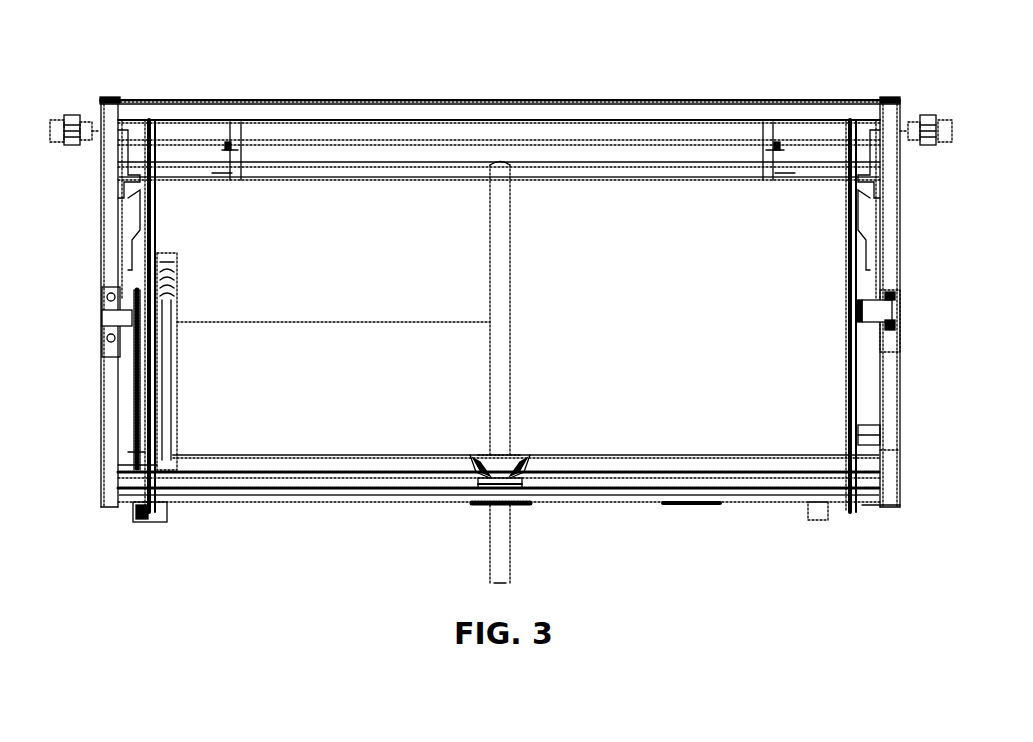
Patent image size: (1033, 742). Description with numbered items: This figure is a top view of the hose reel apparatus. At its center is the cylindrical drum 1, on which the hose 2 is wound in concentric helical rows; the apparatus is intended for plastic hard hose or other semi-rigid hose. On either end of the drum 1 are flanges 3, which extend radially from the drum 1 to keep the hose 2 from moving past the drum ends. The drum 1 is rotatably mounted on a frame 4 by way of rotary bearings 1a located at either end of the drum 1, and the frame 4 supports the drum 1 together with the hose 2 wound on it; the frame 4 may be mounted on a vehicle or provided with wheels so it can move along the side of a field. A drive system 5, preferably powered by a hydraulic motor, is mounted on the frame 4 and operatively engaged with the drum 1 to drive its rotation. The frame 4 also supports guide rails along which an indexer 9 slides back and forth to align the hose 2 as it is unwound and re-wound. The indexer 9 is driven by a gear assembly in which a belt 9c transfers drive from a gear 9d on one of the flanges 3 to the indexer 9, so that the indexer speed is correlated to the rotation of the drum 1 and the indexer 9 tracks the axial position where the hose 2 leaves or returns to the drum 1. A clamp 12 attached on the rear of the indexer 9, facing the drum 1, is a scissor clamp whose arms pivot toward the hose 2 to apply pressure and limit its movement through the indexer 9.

The cylindrical drum 1 is at (712, 178).
The rotary bearings 1a is at (103, 318).
The hose 2 is at (500, 163).
The flanges 3 is at (155, 150).
The frame 4 is at (888, 507).
The drive system 5 is at (64, 158).
The indexer 9 is at (462, 492).
The belt 9c is at (137, 402).
The gear 9d is at (137, 318).
The clamp 12 is at (528, 456).